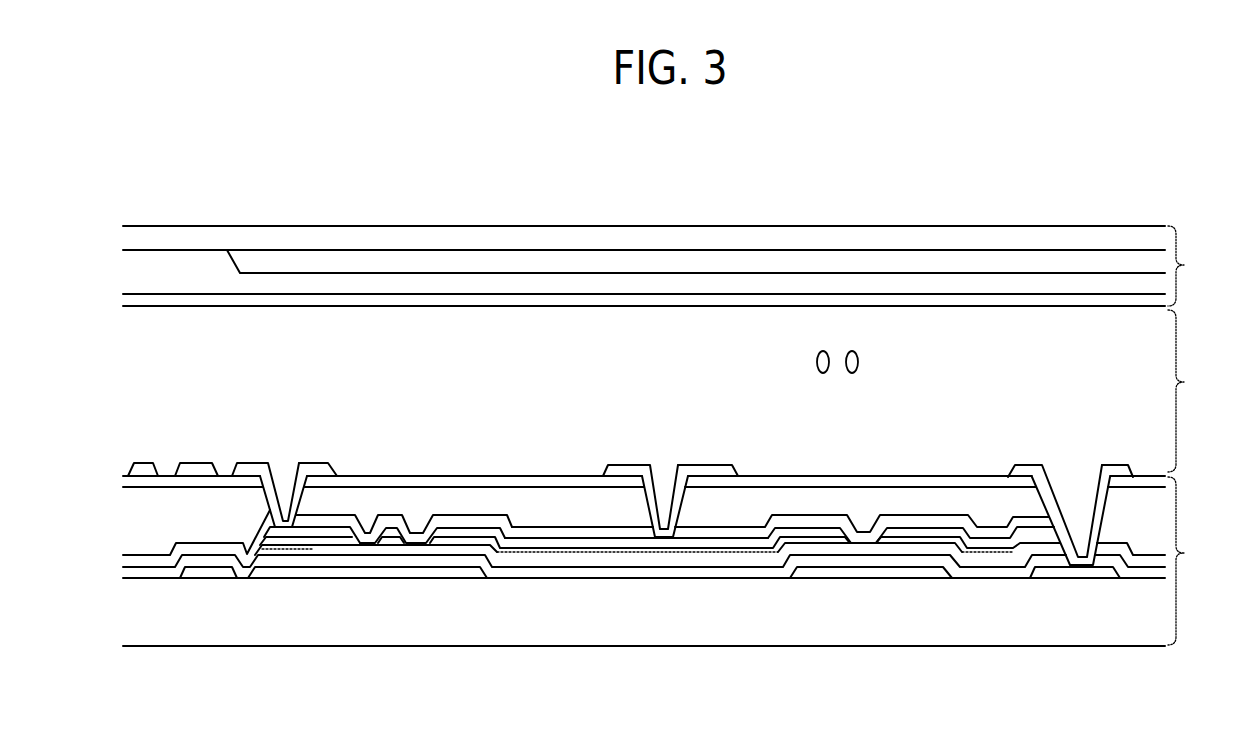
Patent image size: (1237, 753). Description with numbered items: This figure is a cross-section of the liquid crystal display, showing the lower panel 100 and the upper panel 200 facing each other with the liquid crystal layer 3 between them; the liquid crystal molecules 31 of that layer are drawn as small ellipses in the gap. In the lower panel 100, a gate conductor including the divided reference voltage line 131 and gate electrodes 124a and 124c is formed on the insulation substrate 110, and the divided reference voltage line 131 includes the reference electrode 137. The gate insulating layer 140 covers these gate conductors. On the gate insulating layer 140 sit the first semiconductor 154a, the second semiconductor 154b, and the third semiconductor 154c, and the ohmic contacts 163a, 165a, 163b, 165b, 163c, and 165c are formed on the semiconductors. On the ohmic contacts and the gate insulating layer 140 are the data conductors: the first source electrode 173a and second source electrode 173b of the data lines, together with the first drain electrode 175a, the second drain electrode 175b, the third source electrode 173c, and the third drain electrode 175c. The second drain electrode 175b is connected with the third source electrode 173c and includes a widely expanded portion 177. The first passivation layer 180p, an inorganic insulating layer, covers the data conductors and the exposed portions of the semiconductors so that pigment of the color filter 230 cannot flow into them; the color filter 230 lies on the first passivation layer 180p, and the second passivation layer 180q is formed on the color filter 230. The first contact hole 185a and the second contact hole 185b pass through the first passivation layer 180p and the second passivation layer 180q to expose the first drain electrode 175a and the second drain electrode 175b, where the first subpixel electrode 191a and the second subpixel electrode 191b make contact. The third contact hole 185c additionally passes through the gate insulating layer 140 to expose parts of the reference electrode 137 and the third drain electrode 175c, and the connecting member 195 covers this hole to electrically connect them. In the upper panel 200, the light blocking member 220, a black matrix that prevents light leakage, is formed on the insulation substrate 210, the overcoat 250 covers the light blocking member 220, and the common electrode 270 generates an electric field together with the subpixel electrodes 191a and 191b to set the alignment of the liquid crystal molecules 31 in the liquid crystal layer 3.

The liquid crystal layer 3 is at (1185, 391).
The liquid crystal molecules 31 is at (858, 362).
The lower panel 100 is at (1194, 561).
The insulation substrate 110 is at (774, 626).
The gate electrode 124a is at (358, 576).
The gate electrode 124c is at (848, 576).
The divided reference voltage line 131 is at (207, 572).
The reference electrode 137 is at (1075, 574).
The gate insulating layer 140 is at (688, 568).
The first semiconductor 154a is at (349, 556).
The second semiconductor 154b is at (441, 556).
The third semiconductor 154c is at (893, 555).
The ohmic contact 163a is at (390, 546).
The ohmic contact 163b is at (428, 546).
The ohmic contact 163c is at (840, 540).
The ohmic contact 165a is at (263, 548).
The ohmic contact 165b is at (468, 546).
The ohmic contact 165c is at (928, 545).
The first source electrode 173a is at (385, 533).
The second source electrode 173b is at (412, 532).
The third source electrode 173c is at (806, 530).
The first drain electrode 175a is at (291, 540).
The second drain electrode 175b is at (457, 530).
The third drain electrode 175c is at (908, 530).
The expanded portion 177 is at (712, 545).
The first passivation layer 180p is at (147, 560).
The second passivation layer 180q is at (545, 476).
The first contact hole 185a is at (278, 500).
The second contact hole 185b is at (665, 498).
The third contact hole 185c is at (1050, 512).
The first subpixel electrode 191a is at (248, 464).
The second subpixel electrode 191b is at (621, 465).
The connecting member 195 is at (1112, 465).
The upper panel 200 is at (1195, 266).
The insulation substrate 210 is at (703, 240).
The light blocking member 220 is at (972, 262).
The color filter 230 is at (981, 500).
The overcoat 250 is at (191, 270).
The common electrode 270 is at (812, 300).